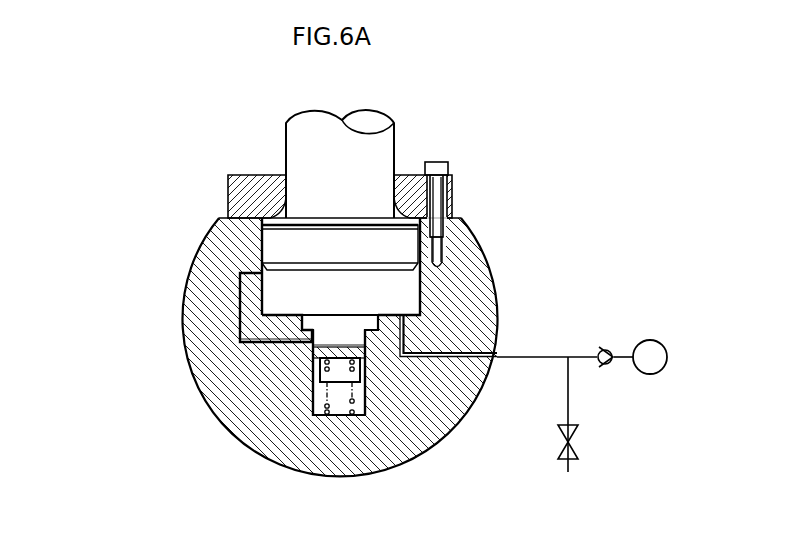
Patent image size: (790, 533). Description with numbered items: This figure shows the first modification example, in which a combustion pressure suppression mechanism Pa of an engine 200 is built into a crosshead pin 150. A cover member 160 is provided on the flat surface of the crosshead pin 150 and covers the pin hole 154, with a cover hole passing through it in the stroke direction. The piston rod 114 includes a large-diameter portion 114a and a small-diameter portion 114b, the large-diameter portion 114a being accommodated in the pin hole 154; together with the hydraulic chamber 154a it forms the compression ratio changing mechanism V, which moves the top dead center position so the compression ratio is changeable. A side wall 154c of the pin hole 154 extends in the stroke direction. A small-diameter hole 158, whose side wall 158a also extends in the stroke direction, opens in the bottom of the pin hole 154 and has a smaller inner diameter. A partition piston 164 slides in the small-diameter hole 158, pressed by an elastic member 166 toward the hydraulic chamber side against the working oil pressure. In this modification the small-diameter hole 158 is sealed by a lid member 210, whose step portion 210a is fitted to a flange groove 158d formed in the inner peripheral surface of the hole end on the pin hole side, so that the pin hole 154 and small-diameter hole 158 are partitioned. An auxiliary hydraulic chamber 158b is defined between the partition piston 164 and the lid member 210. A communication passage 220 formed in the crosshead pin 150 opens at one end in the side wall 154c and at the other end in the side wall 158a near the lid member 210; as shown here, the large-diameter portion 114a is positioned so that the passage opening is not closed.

The engine 200 is at (575, 118).
The piston rod 114 is at (308, 146).
The large-diameter portion 114a is at (305, 252).
The small-diameter portion 114b is at (326, 142).
The crosshead pin 150 is at (184, 336).
The pin hole 154 is at (262, 290).
The hydraulic chamber 154a is at (410, 300).
The side wall of the pin hole 154c is at (262, 235).
The small-diameter hole 158 is at (366, 390).
The side wall of the small-diameter hole 158a is at (368, 388).
The auxiliary hydraulic chamber 158b is at (312, 345).
The flange groove 158d is at (405, 336).
The cover member 160 is at (228, 178).
The partition piston 164 is at (324, 388).
The elastic member 166 is at (341, 410).
The lid member 210 is at (318, 347).
The step portion 210a is at (323, 358).
The communication passage 220 is at (313, 338).
The combustion pressure suppression mechanism Pa is at (499, 270).
The compression ratio changing mechanism V is at (621, 320).